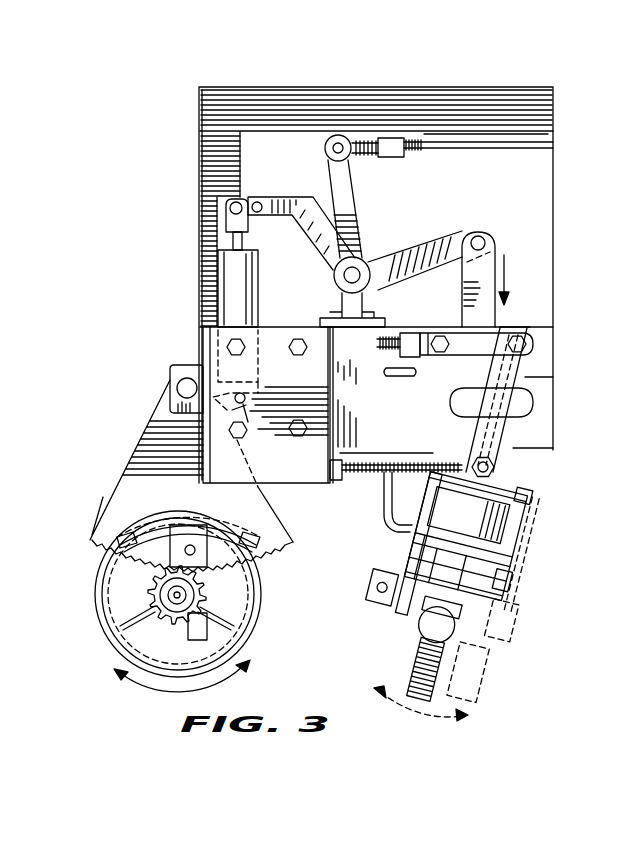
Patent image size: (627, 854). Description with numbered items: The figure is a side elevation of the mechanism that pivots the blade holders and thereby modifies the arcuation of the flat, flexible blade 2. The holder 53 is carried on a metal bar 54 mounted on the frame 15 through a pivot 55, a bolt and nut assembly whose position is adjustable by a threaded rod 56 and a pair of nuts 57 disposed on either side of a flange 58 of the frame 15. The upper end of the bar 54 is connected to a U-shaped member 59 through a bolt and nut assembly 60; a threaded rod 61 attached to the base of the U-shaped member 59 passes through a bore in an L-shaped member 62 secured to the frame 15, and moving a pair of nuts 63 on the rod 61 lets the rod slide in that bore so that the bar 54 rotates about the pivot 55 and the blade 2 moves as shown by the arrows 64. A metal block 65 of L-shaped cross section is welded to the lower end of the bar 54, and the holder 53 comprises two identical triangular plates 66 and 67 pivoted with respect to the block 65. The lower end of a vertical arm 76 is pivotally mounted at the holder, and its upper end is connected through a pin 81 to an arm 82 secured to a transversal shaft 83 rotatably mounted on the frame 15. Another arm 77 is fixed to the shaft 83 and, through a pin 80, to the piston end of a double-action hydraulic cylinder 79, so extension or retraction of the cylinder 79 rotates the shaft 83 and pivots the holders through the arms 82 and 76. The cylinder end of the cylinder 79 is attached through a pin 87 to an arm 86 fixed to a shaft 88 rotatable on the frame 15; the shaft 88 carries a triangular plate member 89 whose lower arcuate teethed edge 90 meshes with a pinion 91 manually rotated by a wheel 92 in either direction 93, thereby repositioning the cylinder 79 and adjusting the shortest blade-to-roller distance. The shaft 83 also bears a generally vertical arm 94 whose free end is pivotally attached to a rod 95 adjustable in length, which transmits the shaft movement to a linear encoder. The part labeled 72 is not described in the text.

The frame 15 is at (200, 135).
The pin 80 is at (226, 206).
The double-action hydraulic cylinder 79 is at (259, 296).
The arm 77 is at (287, 199).
The generally vertical arm 94 is at (349, 195).
The rod 95 is at (520, 152).
The transversal shaft 83 is at (354, 268).
The arm 82 is at (420, 248).
The pin 81 is at (476, 236).
The vertical arm 76 is at (498, 268).
The threaded rod 61 is at (393, 337).
The L-shaped member 62 is at (437, 335).
The bolt and nut assembly 60 is at (536, 344).
The U-shaped member 59 is at (507, 330).
The nuts 63 is at (418, 372).
The metal bar 54 is at (530, 378).
The ring 72 is at (535, 410).
The pivot 55 is at (496, 468).
The threaded rod 56 is at (372, 474).
The nuts 57 is at (335, 481).
The flange 58 is at (327, 450).
The arm 86 is at (262, 388).
The pin 87 is at (249, 422).
The shaft 88 is at (184, 378).
The triangular plate member 89 is at (152, 441).
The arcuate teethed edge 90 is at (110, 552).
The wheel 92 is at (115, 645).
The pinion 91 is at (125, 600).
The direction 93 is at (145, 688).
The holder 53 is at (524, 552).
The metal block 65 is at (527, 512).
The triangular plate 67 is at (507, 575).
The triangular plate 66 is at (400, 556).
The blade 2 is at (430, 654).
The arrows 64 is at (421, 713).